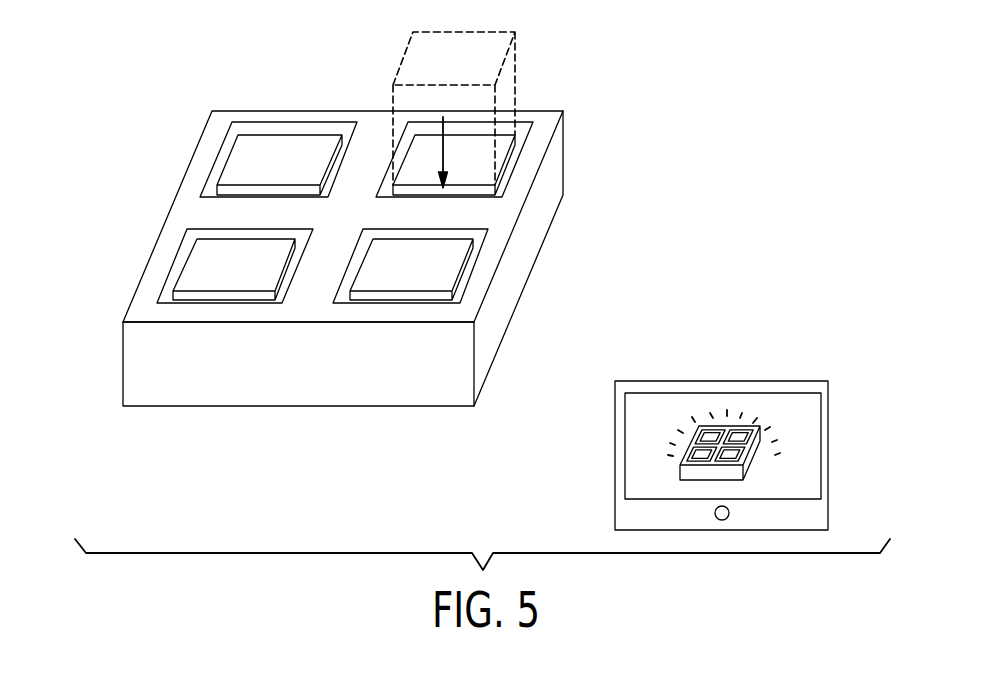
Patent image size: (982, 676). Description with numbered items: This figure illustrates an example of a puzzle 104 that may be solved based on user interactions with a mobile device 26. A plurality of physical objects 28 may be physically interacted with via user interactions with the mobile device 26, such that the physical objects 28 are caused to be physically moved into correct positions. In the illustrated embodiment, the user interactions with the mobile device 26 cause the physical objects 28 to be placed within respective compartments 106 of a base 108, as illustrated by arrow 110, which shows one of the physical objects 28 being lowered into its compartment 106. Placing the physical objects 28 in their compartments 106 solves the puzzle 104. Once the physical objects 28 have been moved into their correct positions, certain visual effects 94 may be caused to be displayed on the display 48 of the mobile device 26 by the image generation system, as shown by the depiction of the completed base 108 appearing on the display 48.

The puzzle 104 is at (170, 76).
The base 108 is at (157, 353).
The compartments 106 is at (217, 165).
The physical objects 28 is at (259, 152).
The arrow 110 is at (413, 145).
The mobile device 26 is at (800, 334).
The display 48 is at (822, 445).
The visual effects 94 is at (690, 423).